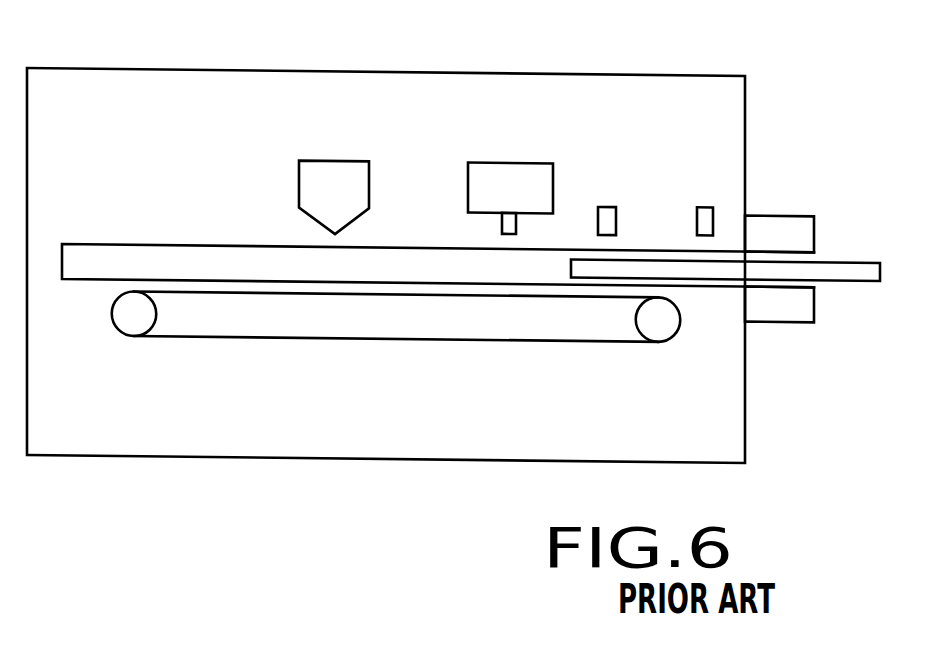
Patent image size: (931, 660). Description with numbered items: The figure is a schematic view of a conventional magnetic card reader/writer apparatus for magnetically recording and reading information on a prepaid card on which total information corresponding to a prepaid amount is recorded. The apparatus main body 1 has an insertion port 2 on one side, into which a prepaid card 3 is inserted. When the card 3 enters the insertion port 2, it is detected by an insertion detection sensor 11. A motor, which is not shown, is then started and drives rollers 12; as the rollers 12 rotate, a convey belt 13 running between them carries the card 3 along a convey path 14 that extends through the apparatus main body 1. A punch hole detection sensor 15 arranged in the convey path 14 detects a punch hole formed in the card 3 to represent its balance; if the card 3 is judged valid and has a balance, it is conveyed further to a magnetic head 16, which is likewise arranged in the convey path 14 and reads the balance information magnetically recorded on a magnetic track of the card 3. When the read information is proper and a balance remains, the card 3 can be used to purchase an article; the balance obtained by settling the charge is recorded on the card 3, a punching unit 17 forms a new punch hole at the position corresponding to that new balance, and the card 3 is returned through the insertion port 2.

The apparatus main body 1 is at (633, 68).
The insertion port 2 is at (792, 216).
The prepaid card 3 is at (859, 258).
The insertion detection sensor 11 is at (707, 200).
The rollers 12 is at (130, 316).
The convey belt 13 is at (415, 293).
The convey path 14 is at (112, 249).
The punch hole detection sensor 15 is at (610, 201).
The magnetic head 16 is at (328, 169).
The punching unit 17 is at (497, 173).